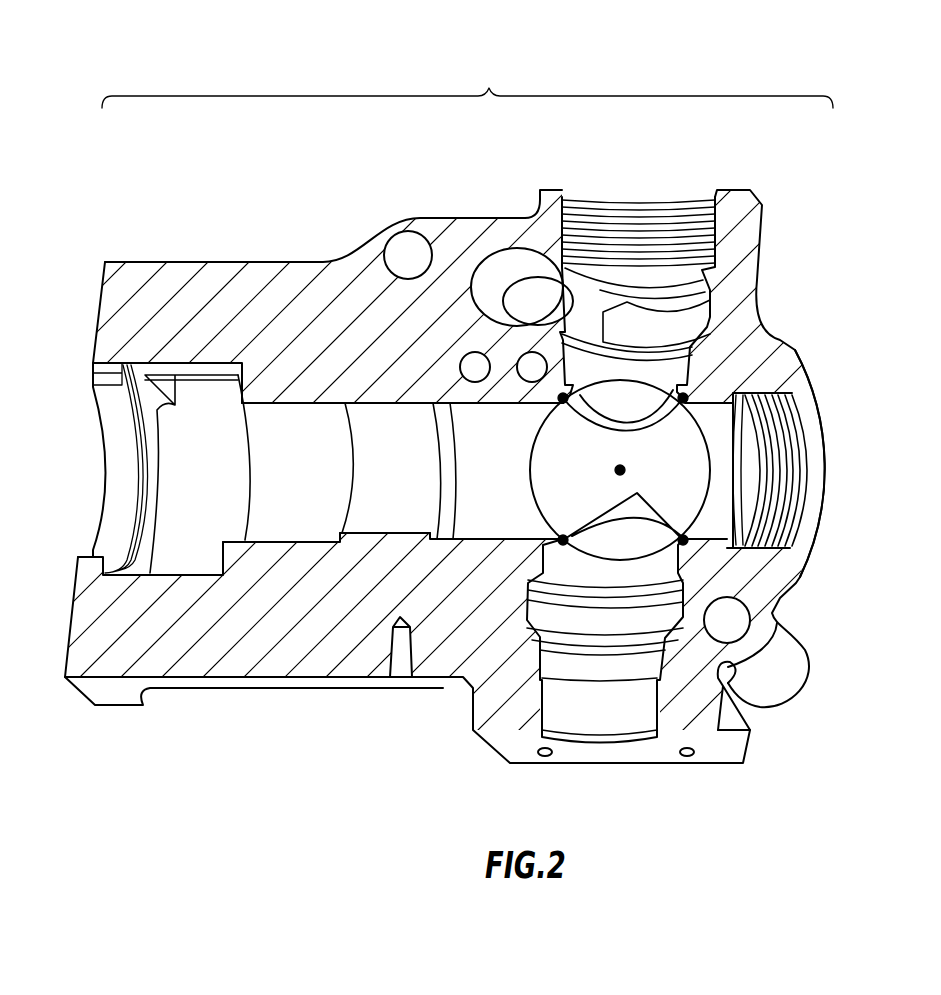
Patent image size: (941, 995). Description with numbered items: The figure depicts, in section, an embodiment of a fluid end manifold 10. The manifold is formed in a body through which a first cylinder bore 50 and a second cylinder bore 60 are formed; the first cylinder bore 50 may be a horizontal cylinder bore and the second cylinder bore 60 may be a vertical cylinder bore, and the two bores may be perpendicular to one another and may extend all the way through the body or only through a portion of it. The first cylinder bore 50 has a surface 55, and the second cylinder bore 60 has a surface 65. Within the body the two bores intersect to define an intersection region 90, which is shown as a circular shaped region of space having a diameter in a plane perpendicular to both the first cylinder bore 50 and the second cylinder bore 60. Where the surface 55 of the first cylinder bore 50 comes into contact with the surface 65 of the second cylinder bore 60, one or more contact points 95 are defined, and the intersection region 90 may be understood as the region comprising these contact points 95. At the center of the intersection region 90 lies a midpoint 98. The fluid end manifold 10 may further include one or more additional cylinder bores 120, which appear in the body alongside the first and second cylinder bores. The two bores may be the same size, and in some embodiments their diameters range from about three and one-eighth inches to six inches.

The fluid end manifold 10 is at (489, 92).
The first cylinder bore 50 is at (650, 205).
The surface 55 is at (610, 697).
The second cylinder bore 60 is at (822, 477).
The surface 65 is at (737, 435).
The intersection region 90 is at (530, 472).
The contact points 95 is at (558, 394).
The midpoint 98 is at (620, 470).
The additional cylinder bores 120 is at (405, 258).